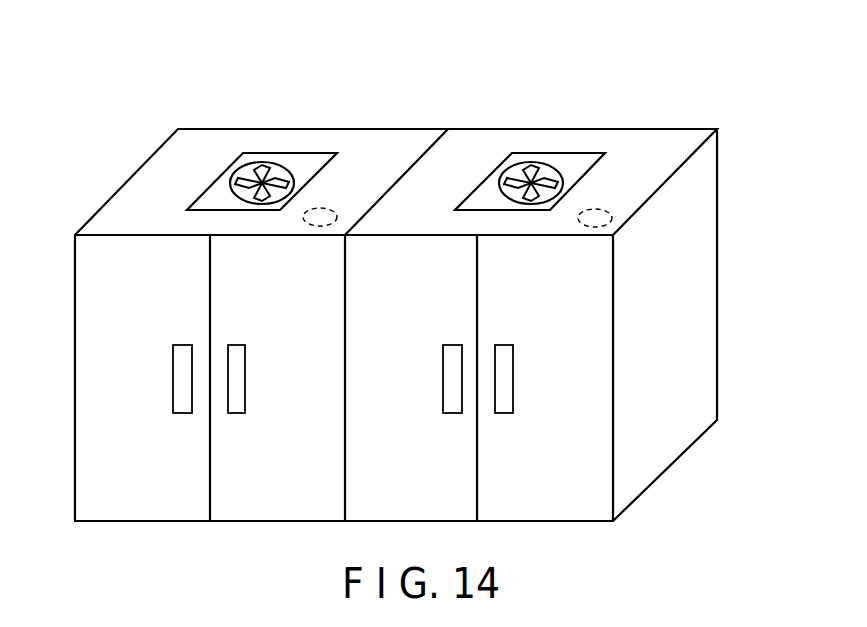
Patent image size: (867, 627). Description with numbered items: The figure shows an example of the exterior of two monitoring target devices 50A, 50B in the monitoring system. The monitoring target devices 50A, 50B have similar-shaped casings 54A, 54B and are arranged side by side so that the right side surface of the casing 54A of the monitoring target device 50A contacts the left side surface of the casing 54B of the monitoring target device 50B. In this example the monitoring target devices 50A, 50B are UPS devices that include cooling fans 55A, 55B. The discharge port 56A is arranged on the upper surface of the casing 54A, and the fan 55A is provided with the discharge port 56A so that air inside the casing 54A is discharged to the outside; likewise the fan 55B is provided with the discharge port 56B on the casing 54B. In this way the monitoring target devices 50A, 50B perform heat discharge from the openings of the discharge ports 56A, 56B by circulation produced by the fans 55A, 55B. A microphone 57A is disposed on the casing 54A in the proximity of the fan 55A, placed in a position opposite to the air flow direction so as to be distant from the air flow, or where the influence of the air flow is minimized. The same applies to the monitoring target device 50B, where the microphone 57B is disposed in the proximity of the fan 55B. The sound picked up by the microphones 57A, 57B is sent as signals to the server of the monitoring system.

The monitoring target device 50A is at (413, 121).
The monitoring target device 50B is at (702, 123).
The casing 54A is at (137, 170).
The casing 54B is at (681, 168).
The fan 55A is at (302, 188).
The fan 55B is at (570, 188).
The discharge port 56A is at (268, 163).
The discharge port 56B is at (537, 163).
The microphone 57A is at (320, 228).
The microphone 57B is at (595, 229).